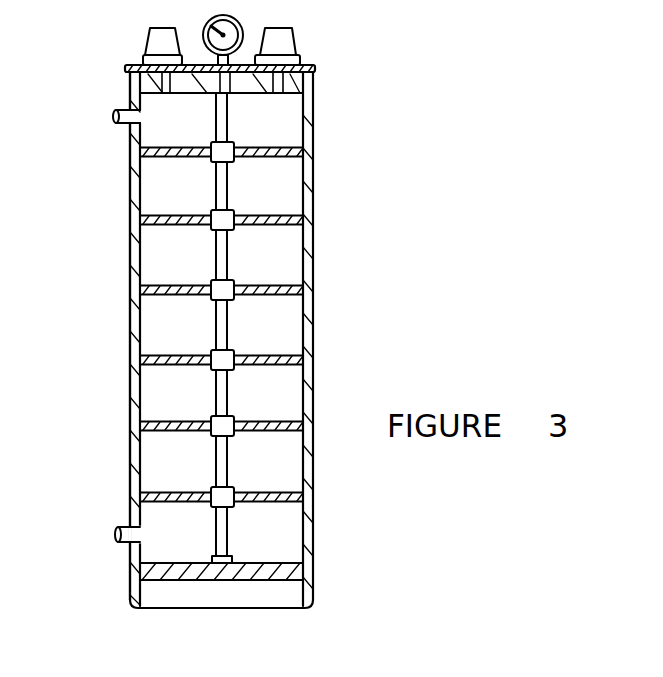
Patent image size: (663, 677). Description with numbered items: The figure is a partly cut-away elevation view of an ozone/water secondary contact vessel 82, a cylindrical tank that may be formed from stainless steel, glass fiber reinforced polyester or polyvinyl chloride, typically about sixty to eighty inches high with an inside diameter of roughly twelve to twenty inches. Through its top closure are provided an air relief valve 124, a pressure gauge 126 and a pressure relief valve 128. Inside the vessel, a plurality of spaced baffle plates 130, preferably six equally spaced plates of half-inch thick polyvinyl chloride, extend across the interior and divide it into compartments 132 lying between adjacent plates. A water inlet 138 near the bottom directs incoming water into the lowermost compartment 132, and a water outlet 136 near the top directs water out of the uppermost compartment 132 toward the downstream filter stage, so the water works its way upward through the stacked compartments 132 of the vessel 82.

The secondary contact vessel 82 is at (313, 258).
The air relief valve 124 is at (158, 27).
The pressure gauge 126 is at (240, 20).
The pressure relief valve 128 is at (286, 44).
The baffle plates 130 is at (287, 146).
The compartments 132 is at (282, 333).
The water outlet 136 is at (113, 118).
The water inlet 138 is at (116, 540).